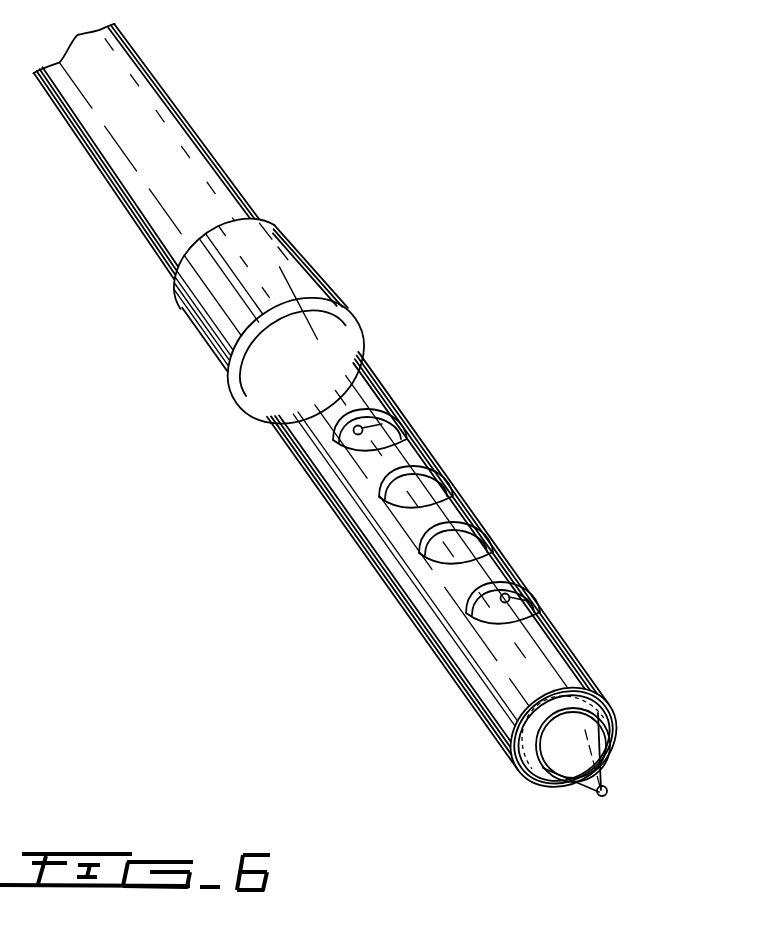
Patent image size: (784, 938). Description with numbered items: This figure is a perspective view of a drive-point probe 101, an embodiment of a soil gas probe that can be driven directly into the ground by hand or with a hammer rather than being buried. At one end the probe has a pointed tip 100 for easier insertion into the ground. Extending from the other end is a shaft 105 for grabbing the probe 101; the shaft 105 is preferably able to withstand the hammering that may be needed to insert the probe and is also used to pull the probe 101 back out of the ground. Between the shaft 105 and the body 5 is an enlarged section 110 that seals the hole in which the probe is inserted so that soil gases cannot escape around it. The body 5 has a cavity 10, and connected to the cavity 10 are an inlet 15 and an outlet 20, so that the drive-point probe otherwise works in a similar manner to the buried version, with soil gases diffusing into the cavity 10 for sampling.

The probe 101 is at (652, 476).
The shaft 105 is at (152, 88).
The enlarged section 110 is at (213, 310).
The cavity 10 is at (460, 615).
The outlet 20 is at (354, 437).
The inlet 15 is at (508, 603).
The body 5 is at (568, 662).
The pointed tip 100 is at (587, 773).